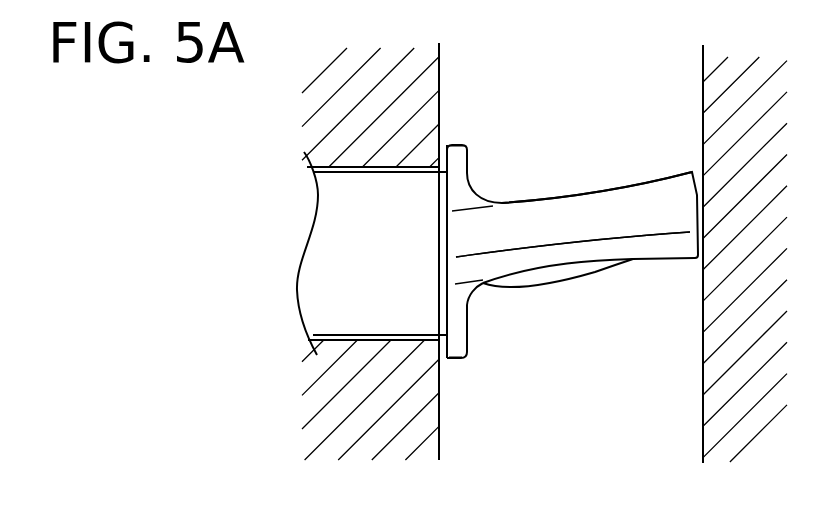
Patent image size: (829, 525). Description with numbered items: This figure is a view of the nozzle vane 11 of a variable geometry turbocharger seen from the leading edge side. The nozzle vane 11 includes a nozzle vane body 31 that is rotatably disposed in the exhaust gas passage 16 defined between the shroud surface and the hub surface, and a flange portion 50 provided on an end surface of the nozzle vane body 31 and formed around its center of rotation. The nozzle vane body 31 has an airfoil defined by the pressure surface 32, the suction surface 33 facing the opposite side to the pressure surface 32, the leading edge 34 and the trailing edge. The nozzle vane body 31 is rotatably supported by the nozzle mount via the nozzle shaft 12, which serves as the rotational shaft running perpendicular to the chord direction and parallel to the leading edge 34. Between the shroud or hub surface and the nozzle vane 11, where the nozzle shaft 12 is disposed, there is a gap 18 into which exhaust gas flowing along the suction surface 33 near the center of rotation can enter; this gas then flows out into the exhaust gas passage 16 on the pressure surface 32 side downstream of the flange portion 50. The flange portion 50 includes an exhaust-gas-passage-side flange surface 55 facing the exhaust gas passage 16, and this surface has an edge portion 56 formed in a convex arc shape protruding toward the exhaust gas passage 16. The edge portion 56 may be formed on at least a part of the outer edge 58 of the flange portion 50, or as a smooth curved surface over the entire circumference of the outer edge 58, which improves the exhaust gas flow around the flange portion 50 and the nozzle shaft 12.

The nozzle vane 11 is at (641, 152).
The nozzle shaft 12 is at (381, 273).
The exhaust gas passage 16 is at (616, 74).
The gap 18 is at (446, 134).
The nozzle vane body 31 is at (668, 225).
The pressure surface 32 is at (577, 270).
The suction surface 33 is at (572, 198).
The leading edge 34 is at (645, 236).
The flange portion 50 is at (471, 354).
The exhaust-gas-passage-side flange surface 55 is at (471, 160).
The edge portion 56 is at (453, 202).
The outer edge 58 is at (449, 146).